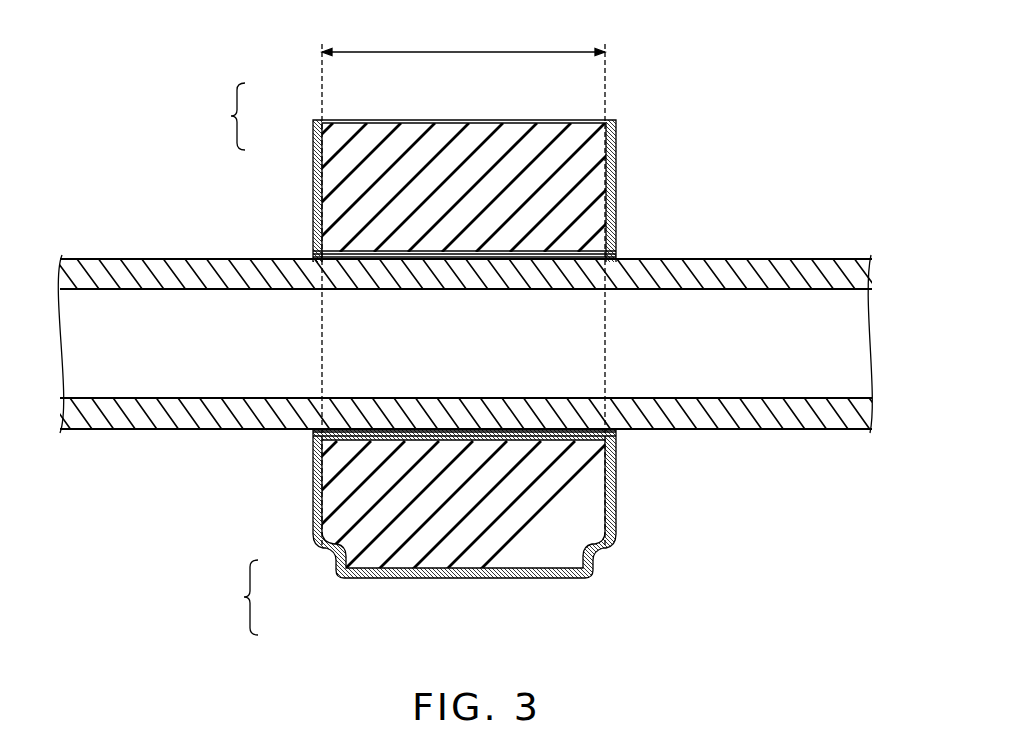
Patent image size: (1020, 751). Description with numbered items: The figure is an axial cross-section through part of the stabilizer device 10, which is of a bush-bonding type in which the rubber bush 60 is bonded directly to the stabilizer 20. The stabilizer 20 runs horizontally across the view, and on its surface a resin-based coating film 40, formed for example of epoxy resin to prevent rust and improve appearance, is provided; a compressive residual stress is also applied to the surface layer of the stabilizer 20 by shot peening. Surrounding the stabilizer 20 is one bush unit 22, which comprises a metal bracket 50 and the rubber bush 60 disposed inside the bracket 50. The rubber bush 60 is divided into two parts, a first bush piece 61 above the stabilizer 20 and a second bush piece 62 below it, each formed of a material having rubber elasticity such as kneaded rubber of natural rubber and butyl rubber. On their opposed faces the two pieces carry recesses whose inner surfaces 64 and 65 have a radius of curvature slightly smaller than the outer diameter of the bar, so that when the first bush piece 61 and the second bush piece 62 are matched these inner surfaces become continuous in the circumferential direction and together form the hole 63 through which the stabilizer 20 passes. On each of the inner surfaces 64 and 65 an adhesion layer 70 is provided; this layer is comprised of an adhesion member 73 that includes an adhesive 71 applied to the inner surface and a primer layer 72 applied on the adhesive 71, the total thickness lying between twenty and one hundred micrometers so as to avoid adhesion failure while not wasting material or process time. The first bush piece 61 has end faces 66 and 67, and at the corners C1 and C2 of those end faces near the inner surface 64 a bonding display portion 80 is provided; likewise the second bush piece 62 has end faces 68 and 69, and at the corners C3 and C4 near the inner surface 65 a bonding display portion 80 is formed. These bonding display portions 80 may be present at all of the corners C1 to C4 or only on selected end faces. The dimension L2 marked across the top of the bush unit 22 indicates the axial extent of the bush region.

The stabilizer device 10 is at (754, 103).
The stabilizer 20 is at (784, 259).
The bush unit 22 is at (447, 580).
The coating film 40 is at (160, 259).
The bracket 50 is at (373, 510).
The rubber bush 60 is at (471, 279).
The first bush piece 61 is at (612, 128).
The second bush piece 62 is at (610, 518).
The hole 63 is at (568, 262).
The inner surface 64 is at (492, 262).
The inner surface 65 is at (497, 428).
The end face 66 is at (313, 203).
The end face 67 is at (610, 172).
The end face 68 is at (320, 502).
The end face 69 is at (608, 486).
The adhesion layer 70 is at (556, 238).
The adhesive 71 is at (447, 250).
The primer layer 72 is at (370, 250).
The adhesion member 73 is at (409, 169).
The bonding display portion 80 is at (312, 250).
The corner C1 is at (313, 257).
The corner C2 is at (612, 254).
The corner C3 is at (313, 436).
The corner C4 is at (614, 438).
The length of damping member L2 is at (465, 52).